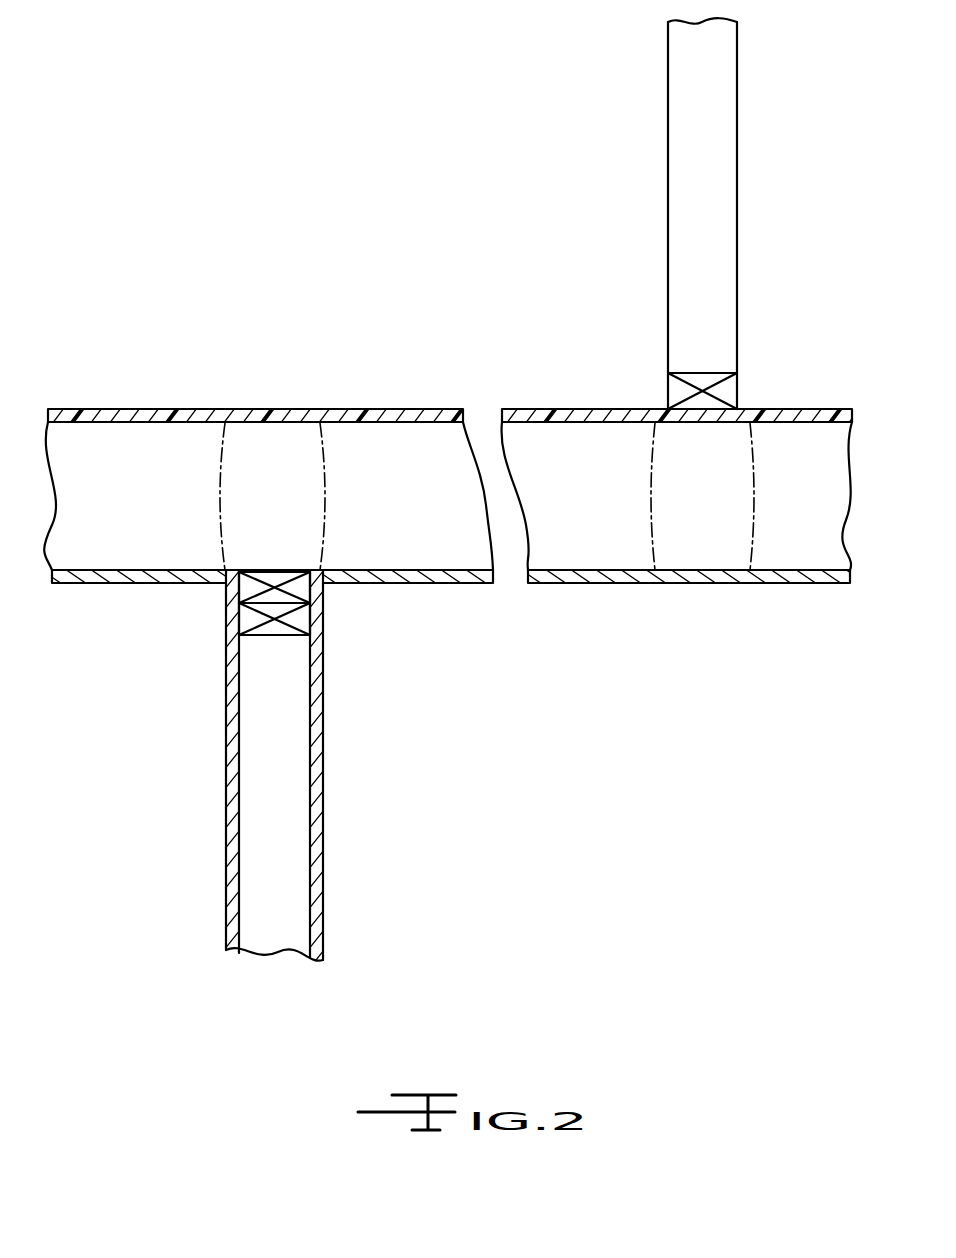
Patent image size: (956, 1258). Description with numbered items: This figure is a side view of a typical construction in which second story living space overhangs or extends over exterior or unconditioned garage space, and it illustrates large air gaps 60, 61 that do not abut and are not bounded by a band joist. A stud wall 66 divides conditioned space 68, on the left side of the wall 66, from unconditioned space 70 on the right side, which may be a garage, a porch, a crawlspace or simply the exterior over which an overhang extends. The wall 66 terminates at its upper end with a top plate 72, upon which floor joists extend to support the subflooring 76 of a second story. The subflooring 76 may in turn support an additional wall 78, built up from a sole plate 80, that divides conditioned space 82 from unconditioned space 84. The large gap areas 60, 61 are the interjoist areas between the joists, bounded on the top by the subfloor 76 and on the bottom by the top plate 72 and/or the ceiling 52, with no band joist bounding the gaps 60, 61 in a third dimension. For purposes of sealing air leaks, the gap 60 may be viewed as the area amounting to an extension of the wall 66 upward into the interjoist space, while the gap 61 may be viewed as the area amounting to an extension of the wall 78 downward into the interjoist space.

The ceiling 52 is at (408, 583).
The large air gap 60 is at (277, 466).
The large air gap 61 is at (702, 517).
The stud wall 66 is at (287, 833).
The conditioned space 68 is at (133, 802).
The unconditioned space 70 is at (560, 776).
The top plate 72 is at (246, 586).
The subflooring 76 is at (397, 409).
The additional wall 78 is at (710, 204).
The sole plate 80 is at (727, 390).
The conditioned space 82 is at (422, 254).
The unconditioned space 84 is at (819, 213).